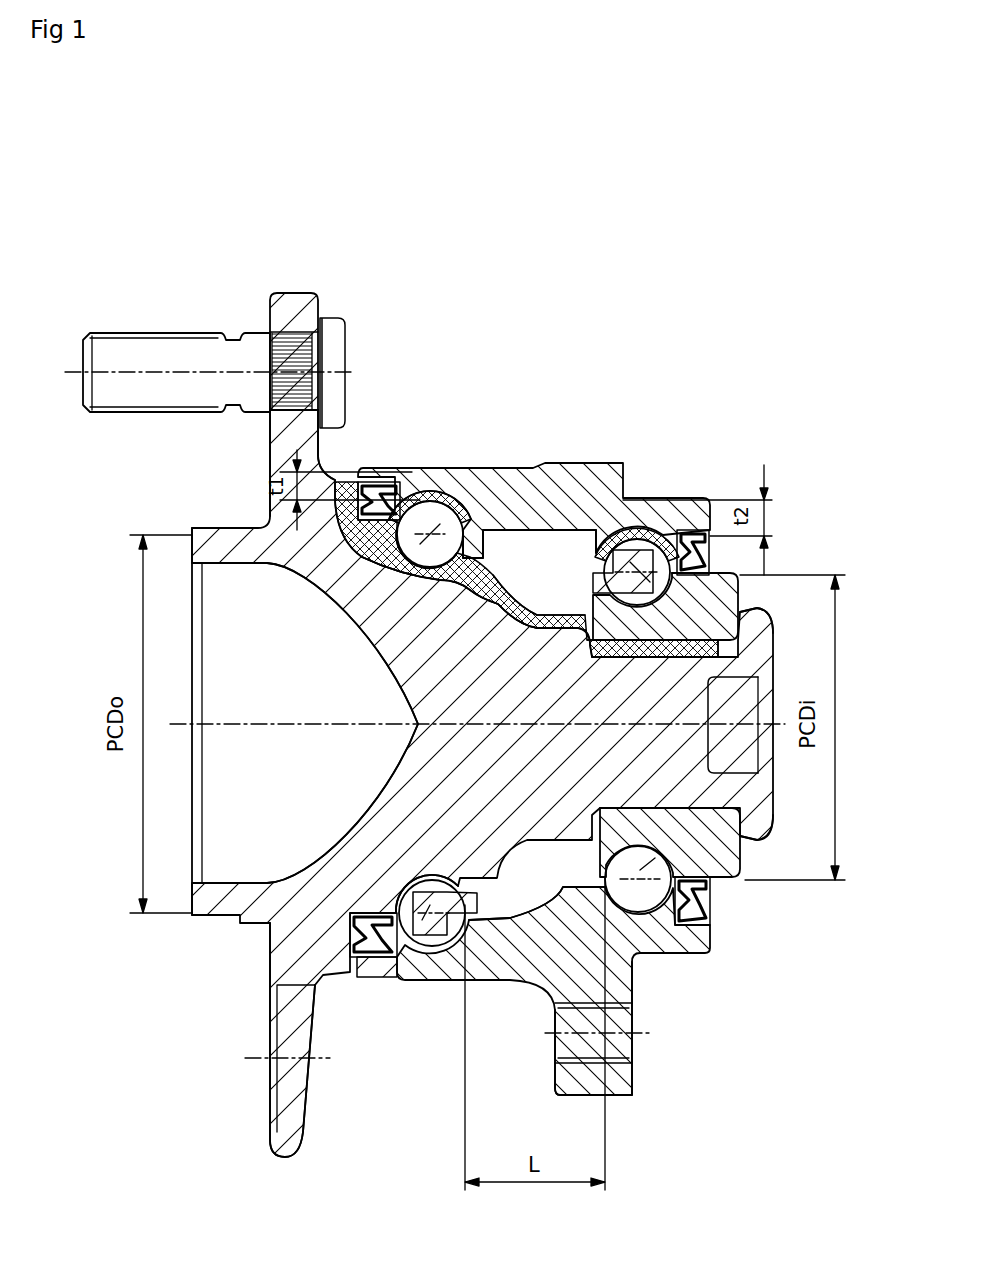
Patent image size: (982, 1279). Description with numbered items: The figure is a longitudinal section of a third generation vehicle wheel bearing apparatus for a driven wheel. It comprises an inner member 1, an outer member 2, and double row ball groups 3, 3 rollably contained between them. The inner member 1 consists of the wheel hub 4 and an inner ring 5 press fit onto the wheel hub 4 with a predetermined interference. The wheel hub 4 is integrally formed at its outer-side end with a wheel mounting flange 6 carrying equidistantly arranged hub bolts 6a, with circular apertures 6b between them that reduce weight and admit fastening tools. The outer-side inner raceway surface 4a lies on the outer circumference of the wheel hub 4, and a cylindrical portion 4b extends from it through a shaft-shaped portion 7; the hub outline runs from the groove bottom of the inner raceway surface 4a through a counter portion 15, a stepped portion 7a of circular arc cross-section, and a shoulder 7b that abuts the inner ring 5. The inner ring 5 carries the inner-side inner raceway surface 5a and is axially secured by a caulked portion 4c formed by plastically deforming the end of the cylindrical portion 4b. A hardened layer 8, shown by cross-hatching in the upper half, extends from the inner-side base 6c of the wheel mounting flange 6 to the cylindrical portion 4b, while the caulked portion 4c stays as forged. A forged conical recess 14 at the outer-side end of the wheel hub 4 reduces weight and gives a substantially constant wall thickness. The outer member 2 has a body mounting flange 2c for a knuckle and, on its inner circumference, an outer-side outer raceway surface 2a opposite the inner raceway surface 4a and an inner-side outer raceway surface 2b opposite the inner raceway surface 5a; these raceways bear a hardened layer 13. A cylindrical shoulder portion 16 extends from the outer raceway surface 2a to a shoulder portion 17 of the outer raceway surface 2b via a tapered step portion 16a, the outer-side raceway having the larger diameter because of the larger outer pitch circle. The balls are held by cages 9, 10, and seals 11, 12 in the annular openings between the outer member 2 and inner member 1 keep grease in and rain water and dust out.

The inner member 1 is at (350, 636).
The outer member 2 is at (517, 477).
The outer-side outer raceway surface 2a is at (437, 523).
The inner-side outer raceway surface 2b is at (637, 550).
The body mounting flange 2c is at (580, 1088).
The ball group 3 is at (505, 968).
The wheel hub 4 is at (357, 602).
The inner raceway surface 4a is at (427, 553).
The cylindrical portion 4b is at (715, 640).
The caulked portion 4c is at (753, 632).
The inner ring 5 is at (713, 593).
The inner raceway surface 5a is at (692, 565).
The wheel mounting flange 6 is at (304, 300).
The hub bolt 6a is at (160, 352).
The circular aperture 6b is at (287, 1008).
The inner-side base 6c is at (333, 473).
The shaft-shaped portion 7 is at (558, 612).
The stepped portion 7a is at (518, 590).
The shoulder 7b is at (611, 655).
The hardened layer 8 is at (488, 598).
The cage 9 is at (432, 928).
The cage 10 is at (592, 868).
The seal 11 is at (372, 962).
The seal 12 is at (713, 898).
The hardened layer 13 is at (395, 488).
The conical recess 14 is at (410, 763).
The counter portion 15 is at (463, 578).
The cylindrical shoulder portion 16 is at (478, 530).
The tapered step portion 16a is at (537, 575).
The shoulder portion 17 is at (582, 505).